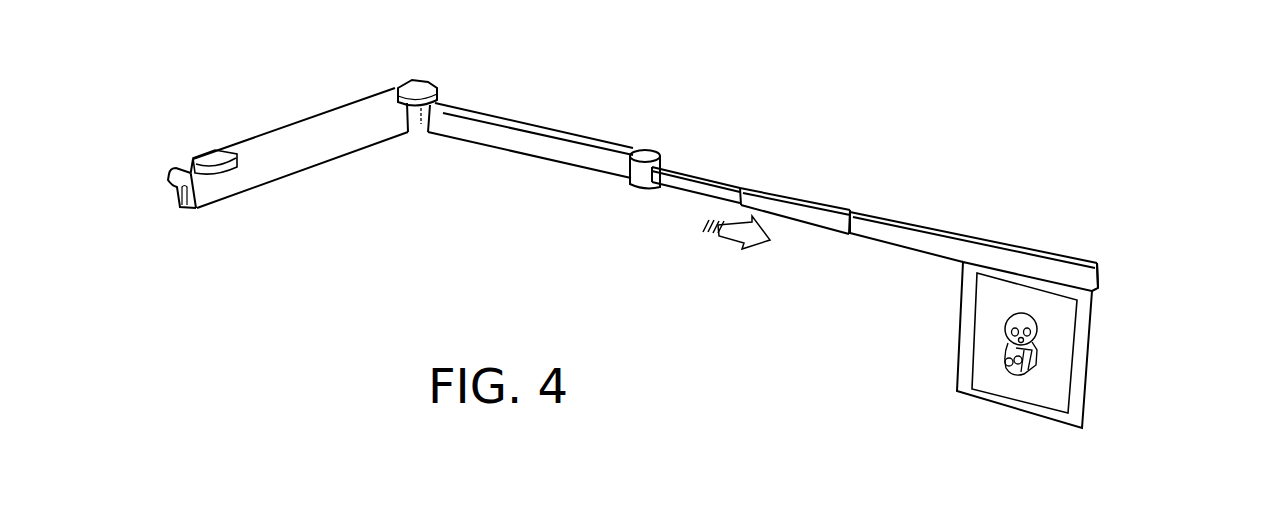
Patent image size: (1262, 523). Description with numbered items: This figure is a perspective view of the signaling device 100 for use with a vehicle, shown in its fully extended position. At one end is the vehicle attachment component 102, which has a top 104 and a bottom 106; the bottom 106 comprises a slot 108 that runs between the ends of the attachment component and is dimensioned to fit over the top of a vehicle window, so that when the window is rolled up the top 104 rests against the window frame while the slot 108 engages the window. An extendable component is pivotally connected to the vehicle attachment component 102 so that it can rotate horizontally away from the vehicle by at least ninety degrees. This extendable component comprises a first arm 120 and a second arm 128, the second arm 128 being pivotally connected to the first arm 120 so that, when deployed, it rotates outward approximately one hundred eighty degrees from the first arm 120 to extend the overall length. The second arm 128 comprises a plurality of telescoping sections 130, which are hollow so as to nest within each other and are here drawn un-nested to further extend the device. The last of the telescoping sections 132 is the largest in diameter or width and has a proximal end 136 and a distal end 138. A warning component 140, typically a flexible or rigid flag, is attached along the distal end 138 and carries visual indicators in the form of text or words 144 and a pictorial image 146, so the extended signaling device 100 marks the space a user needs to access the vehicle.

The signaling device 100 is at (585, 245).
The vehicle attachment component 102 is at (307, 112).
The top 104 is at (242, 140).
The bottom 106 is at (278, 179).
The slot 108 is at (183, 207).
The first arm 120 is at (522, 165).
The second arm 128 is at (852, 180).
The plurality of telescoping sections 130 is at (695, 195).
The last of the telescoping sections 132 is at (943, 230).
The proximal end 136 is at (862, 213).
The distal end 138 is at (1098, 262).
The warning component 140 is at (1112, 379).
The text or words 144 is at (980, 391).
The pictorial image 146 is at (1045, 333).